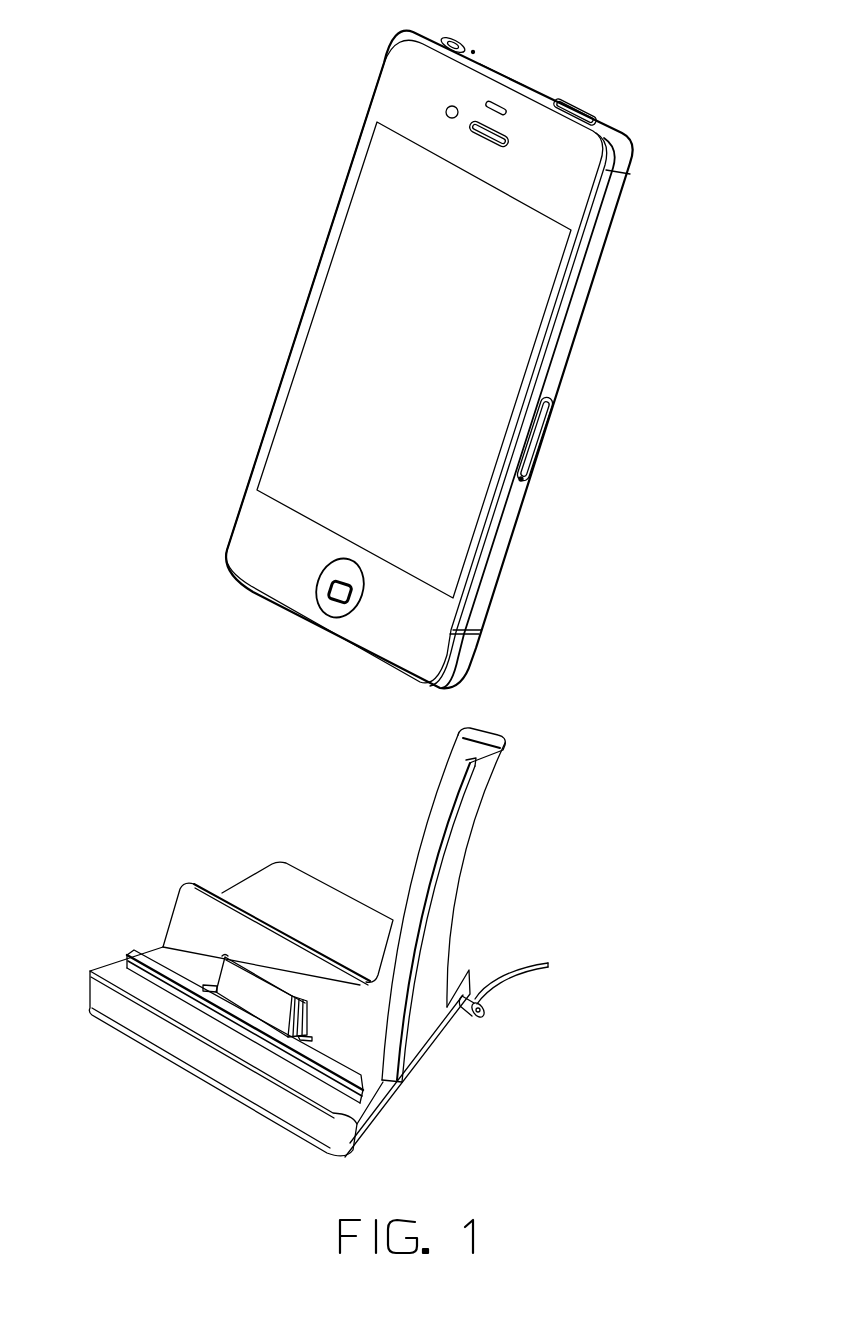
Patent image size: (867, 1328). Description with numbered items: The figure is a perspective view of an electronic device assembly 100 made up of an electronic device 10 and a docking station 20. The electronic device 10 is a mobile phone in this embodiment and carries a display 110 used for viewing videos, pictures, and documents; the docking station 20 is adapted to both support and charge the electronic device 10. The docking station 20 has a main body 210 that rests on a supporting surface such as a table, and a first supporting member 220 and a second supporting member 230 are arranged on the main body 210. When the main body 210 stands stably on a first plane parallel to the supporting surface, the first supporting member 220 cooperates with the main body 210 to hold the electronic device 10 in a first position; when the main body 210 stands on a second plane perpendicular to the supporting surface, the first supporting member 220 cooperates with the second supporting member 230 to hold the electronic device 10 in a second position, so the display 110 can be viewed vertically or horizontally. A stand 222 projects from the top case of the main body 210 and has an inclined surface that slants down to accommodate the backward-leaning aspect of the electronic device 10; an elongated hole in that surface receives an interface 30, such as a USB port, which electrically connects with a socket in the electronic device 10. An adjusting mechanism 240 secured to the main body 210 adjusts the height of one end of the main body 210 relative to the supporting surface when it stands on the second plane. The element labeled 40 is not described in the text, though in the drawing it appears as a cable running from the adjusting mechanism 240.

The electronic device assembly 100 is at (284, 30).
The electronic device 10 is at (590, 267).
The display 110 is at (500, 325).
The docking station 20 is at (220, 866).
The main body 210 is at (305, 888).
The first supporting member 220 is at (469, 738).
The second supporting member 230 is at (477, 798).
The adjusting mechanism 240 is at (485, 1012).
The stand 222 is at (310, 1085).
The interface 30 is at (237, 985).
The cable 40 is at (546, 960).